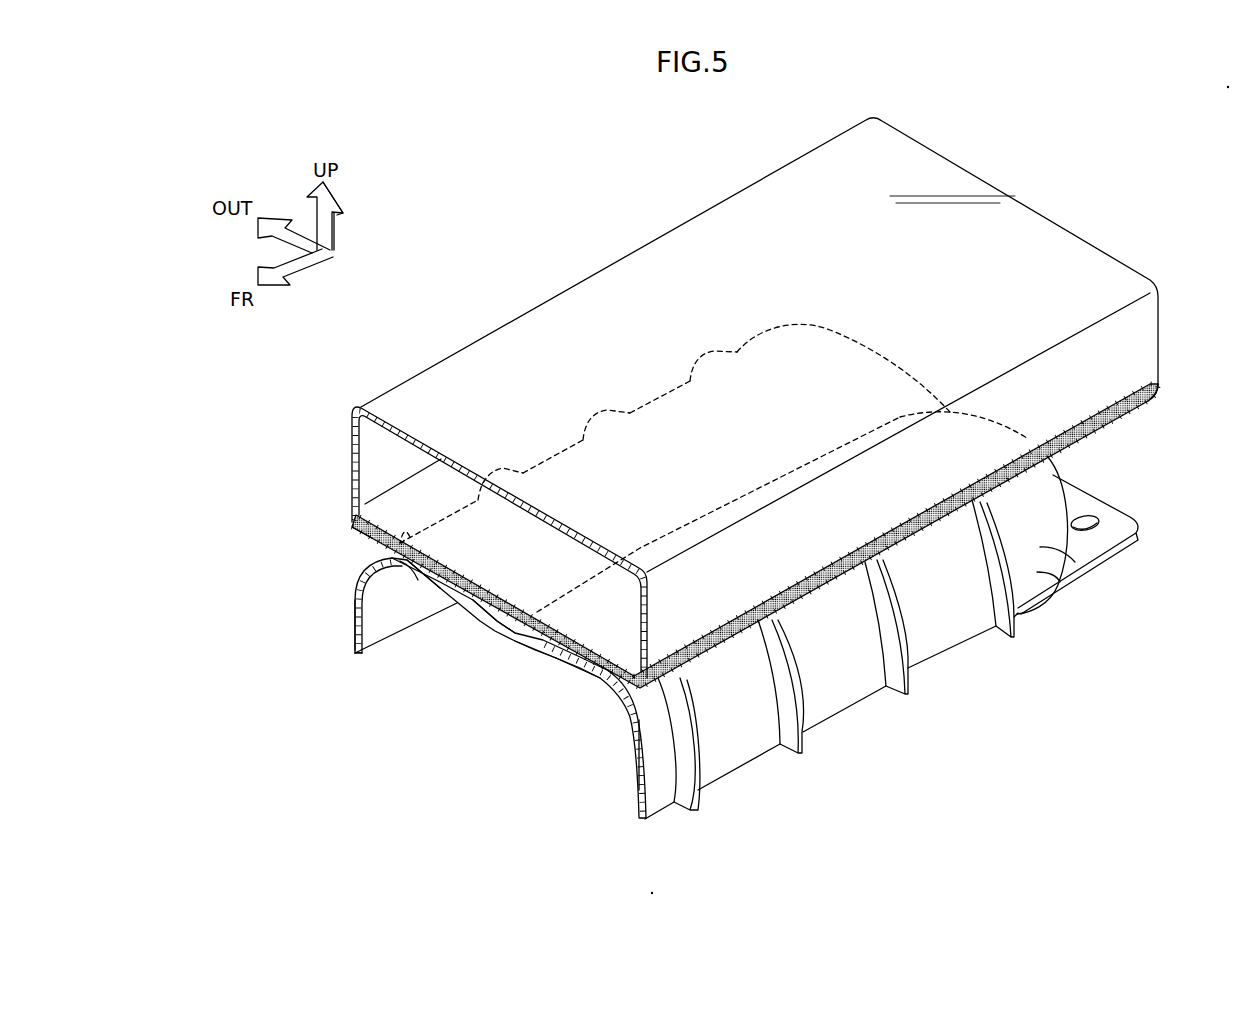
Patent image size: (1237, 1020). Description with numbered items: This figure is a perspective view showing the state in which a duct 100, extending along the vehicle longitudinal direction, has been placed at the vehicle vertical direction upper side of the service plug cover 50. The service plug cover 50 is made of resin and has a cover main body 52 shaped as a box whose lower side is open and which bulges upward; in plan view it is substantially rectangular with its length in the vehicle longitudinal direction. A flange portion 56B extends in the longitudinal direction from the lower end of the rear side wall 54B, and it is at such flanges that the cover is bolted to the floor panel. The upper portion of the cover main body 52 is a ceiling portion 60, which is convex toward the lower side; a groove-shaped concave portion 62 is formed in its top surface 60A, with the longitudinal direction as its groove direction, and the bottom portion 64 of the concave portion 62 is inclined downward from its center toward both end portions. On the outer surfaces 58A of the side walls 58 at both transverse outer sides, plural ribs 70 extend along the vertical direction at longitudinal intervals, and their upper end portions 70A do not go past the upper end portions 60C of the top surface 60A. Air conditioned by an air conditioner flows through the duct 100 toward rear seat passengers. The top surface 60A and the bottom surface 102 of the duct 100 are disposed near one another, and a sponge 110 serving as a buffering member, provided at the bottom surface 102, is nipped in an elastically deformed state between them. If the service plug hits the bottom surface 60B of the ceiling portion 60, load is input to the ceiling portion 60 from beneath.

The duct 100 is at (1068, 231).
The bottom surface of the duct 102 is at (362, 532).
The sponge 110 is at (1147, 400).
The service plug cover 50 is at (787, 777).
The cover main body 52 is at (736, 771).
The rear side wall 54B is at (1057, 466).
The flange portion 56B is at (1122, 525).
The side wall 58 is at (1060, 582).
The outer surface of the side wall 58A is at (1075, 562).
The ceiling portion 60 is at (420, 572).
The top surface 60A is at (435, 590).
The bottom surface of the ceiling portion 60B is at (590, 668).
The upper end portion of the top surface 60C is at (360, 568).
The concave portion 62 is at (528, 643).
The bottom portion 64 is at (493, 613).
The rib 70 is at (1011, 638).
The upper end portion of the rib 70A is at (870, 560).